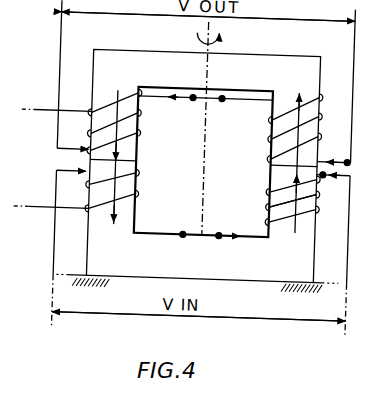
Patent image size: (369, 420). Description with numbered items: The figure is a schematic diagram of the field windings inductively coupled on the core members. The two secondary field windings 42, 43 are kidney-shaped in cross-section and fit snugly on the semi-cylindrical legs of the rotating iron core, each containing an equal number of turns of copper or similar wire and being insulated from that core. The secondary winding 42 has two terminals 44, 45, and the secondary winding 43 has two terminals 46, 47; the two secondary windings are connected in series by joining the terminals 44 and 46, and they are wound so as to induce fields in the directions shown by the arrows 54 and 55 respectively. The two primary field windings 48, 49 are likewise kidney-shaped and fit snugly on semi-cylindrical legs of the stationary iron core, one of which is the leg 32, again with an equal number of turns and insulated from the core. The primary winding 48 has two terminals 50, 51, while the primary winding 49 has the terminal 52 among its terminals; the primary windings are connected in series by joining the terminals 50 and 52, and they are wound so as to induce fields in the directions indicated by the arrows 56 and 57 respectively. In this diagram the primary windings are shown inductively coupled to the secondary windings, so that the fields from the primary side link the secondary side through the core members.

The semi-cylindrical shaped leg 32 is at (115, 248).
The secondary field winding 42 is at (103, 111).
The secondary field winding 43 is at (306, 97).
The terminal 44 is at (191, 97).
The terminal 45 is at (84, 153).
The terminal 46 is at (222, 96).
The terminal 47 is at (345, 155).
The primary field winding 48 is at (89, 187).
The primary field winding 49 is at (304, 213).
The terminal 50 is at (72, 174).
The terminal 51 is at (185, 236).
The terminal 52 is at (221, 236).
The arrow 54 is at (265, 126).
The arrow 55 is at (111, 93).
The arrow 56 is at (121, 191).
The arrow 57 is at (267, 207).